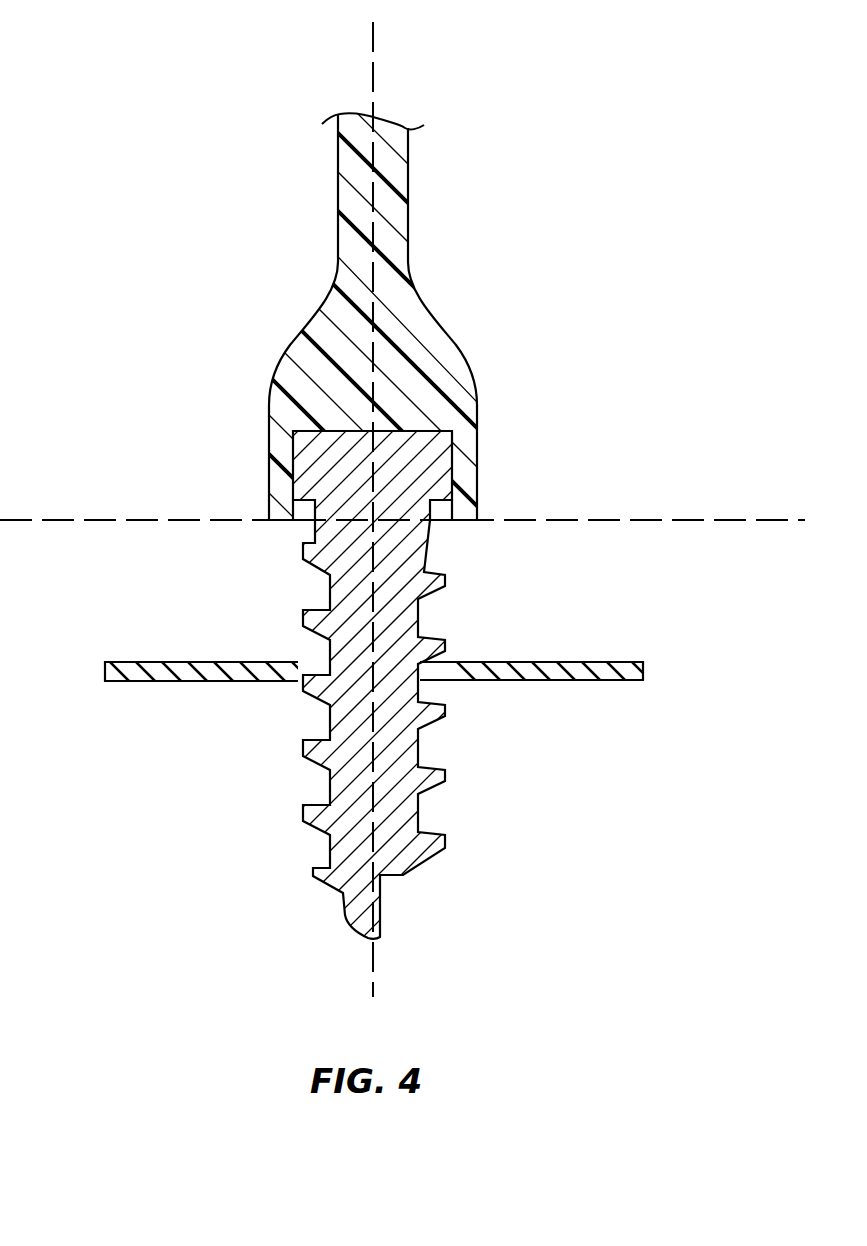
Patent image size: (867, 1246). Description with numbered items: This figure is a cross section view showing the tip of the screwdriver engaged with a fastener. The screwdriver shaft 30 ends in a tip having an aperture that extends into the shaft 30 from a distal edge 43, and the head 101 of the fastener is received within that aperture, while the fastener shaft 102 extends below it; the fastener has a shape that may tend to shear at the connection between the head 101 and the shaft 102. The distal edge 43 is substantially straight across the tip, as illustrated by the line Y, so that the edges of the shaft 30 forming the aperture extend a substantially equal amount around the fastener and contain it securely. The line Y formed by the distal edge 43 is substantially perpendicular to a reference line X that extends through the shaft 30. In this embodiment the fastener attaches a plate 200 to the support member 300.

The shaft 30 is at (408, 180).
The distal edge 43 is at (284, 521).
The head 101 is at (312, 453).
The shaft 102 is at (393, 620).
The plate 200 is at (177, 662).
The support member 300 is at (255, 807).
The reference line X is at (374, 58).
The line Y is at (617, 520).